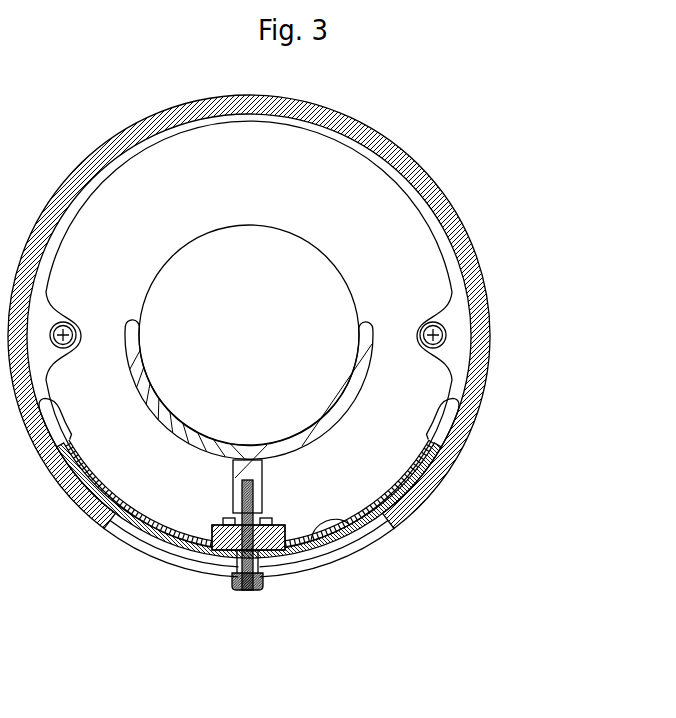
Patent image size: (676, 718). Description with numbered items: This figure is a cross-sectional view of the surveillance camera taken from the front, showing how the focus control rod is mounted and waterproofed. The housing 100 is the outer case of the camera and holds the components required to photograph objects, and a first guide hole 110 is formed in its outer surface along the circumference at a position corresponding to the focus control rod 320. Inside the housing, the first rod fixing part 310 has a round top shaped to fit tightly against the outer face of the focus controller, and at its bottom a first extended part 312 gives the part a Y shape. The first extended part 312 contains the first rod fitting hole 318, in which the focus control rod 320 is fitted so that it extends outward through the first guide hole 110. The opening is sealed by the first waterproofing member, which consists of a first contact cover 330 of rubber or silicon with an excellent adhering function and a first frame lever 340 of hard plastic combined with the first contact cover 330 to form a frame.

The housing 100 is at (442, 195).
The first guide hole 110 is at (170, 553).
The first rod fixing part 310 is at (362, 328).
The first extended part 312 is at (238, 494).
The first rod fitting hole 318 is at (252, 483).
The focus control rod 320 is at (263, 588).
The first contact cover 330 is at (432, 460).
The first frame lever 340 is at (349, 525).